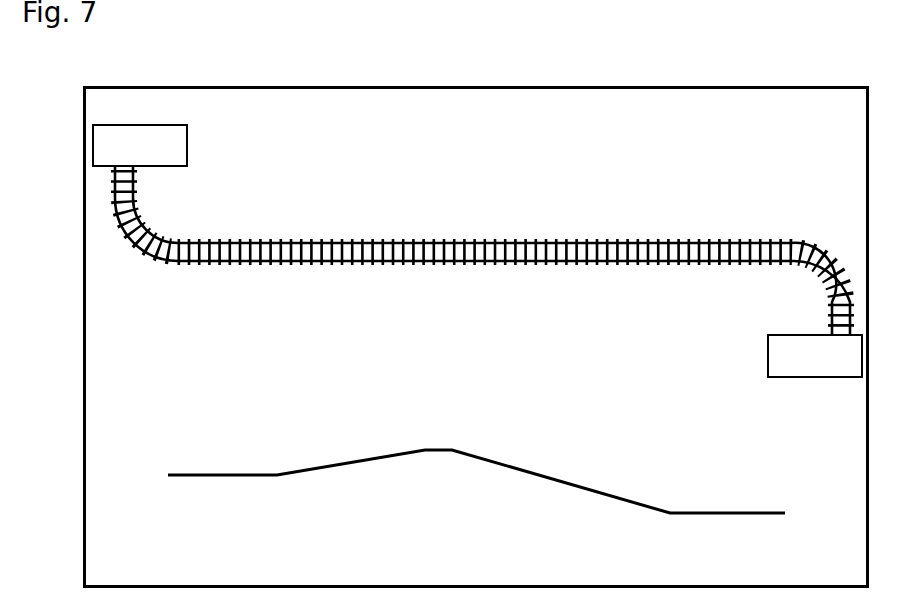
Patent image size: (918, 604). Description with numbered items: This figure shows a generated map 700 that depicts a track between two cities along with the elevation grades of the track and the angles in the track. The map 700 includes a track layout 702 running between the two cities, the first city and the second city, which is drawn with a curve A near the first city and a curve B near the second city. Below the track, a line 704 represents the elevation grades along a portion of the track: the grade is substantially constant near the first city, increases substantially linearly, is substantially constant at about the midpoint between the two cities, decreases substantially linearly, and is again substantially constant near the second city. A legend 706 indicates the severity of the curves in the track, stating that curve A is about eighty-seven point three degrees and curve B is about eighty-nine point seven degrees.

The map 700 is at (598, 86).
The track layout 702 is at (396, 240).
The line 704 is at (257, 476).
The legend 706 is at (677, 409).